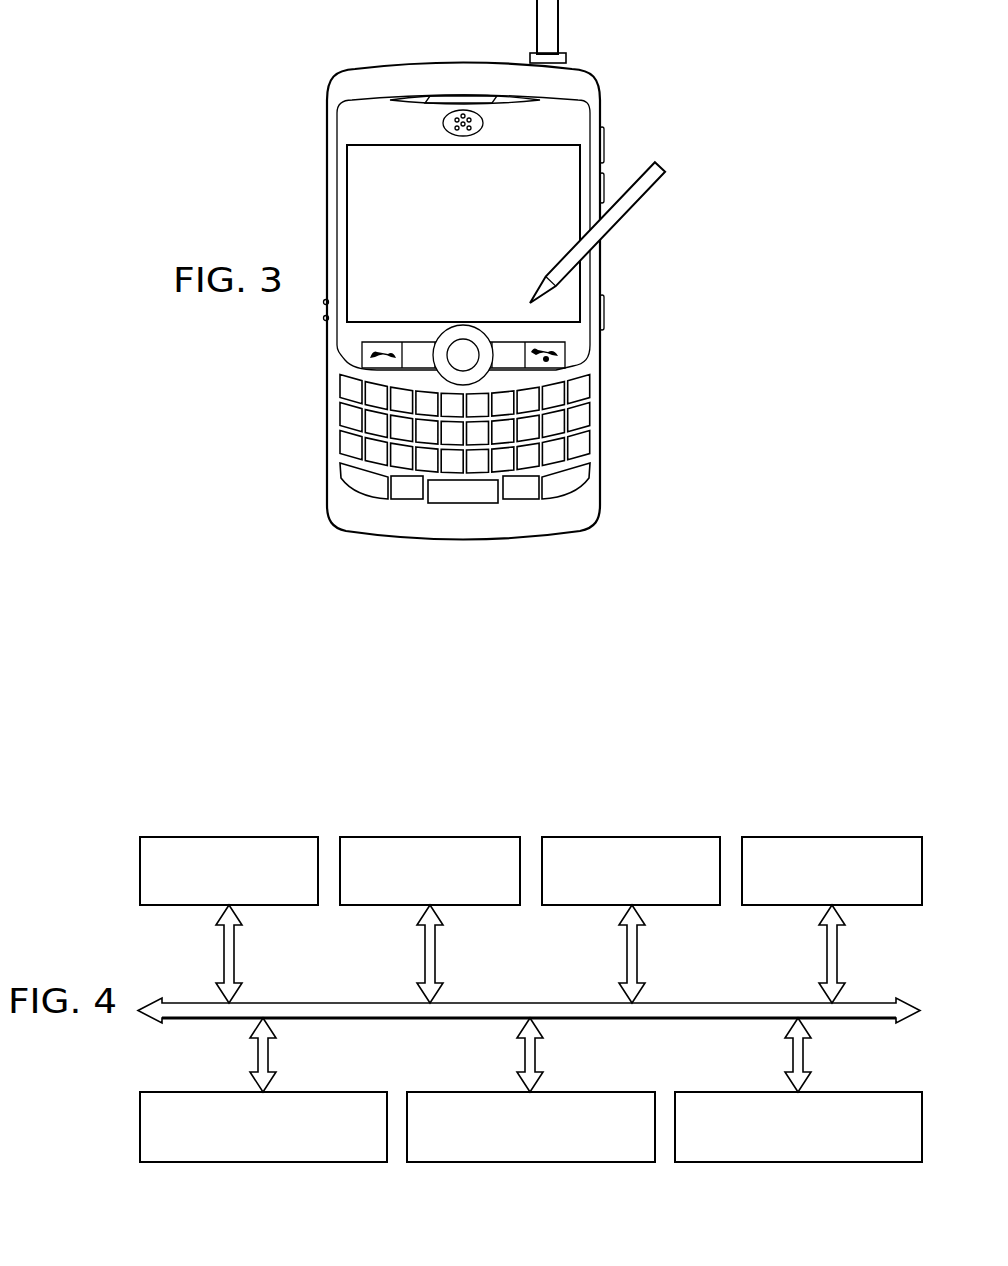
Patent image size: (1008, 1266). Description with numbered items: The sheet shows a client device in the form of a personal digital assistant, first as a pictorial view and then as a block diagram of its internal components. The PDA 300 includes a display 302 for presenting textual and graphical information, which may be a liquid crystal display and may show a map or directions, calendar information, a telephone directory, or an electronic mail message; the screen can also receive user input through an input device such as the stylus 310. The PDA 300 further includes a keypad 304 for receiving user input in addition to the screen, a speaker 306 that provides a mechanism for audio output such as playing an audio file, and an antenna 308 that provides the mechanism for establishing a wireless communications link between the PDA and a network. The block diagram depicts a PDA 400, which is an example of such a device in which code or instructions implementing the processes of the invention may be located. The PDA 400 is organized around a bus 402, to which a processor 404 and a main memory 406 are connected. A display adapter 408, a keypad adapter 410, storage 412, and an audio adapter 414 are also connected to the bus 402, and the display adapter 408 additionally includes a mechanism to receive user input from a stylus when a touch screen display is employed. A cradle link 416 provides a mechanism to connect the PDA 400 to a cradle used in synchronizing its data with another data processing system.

In FIG. 3, the PDA 300 is at (392, 65).
In FIG. 3, the display 302 is at (442, 247).
In FIG. 3, the keypad 304 is at (608, 376).
In FIG. 3, the speaker 306 is at (483, 123).
In FIG. 3, the antenna 308 is at (558, 24).
In FIG. 3, the stylus 310 is at (632, 207).
In FIG. 4, the PDA 400 is at (609, 771).
In FIG. 4, the bus 402 is at (520, 1002).
In FIG. 4, the processor 404 is at (218, 835).
In FIG. 4, the main memory 406 is at (420, 835).
In FIG. 4, the display adapter 408 is at (642, 835).
In FIG. 4, the keypad adapter 410 is at (843, 835).
In FIG. 4, the storage 412 is at (252, 1162).
In FIG. 4, the audio adapter 414 is at (520, 1162).
In FIG. 4, the cradle link 416 is at (810, 1162).